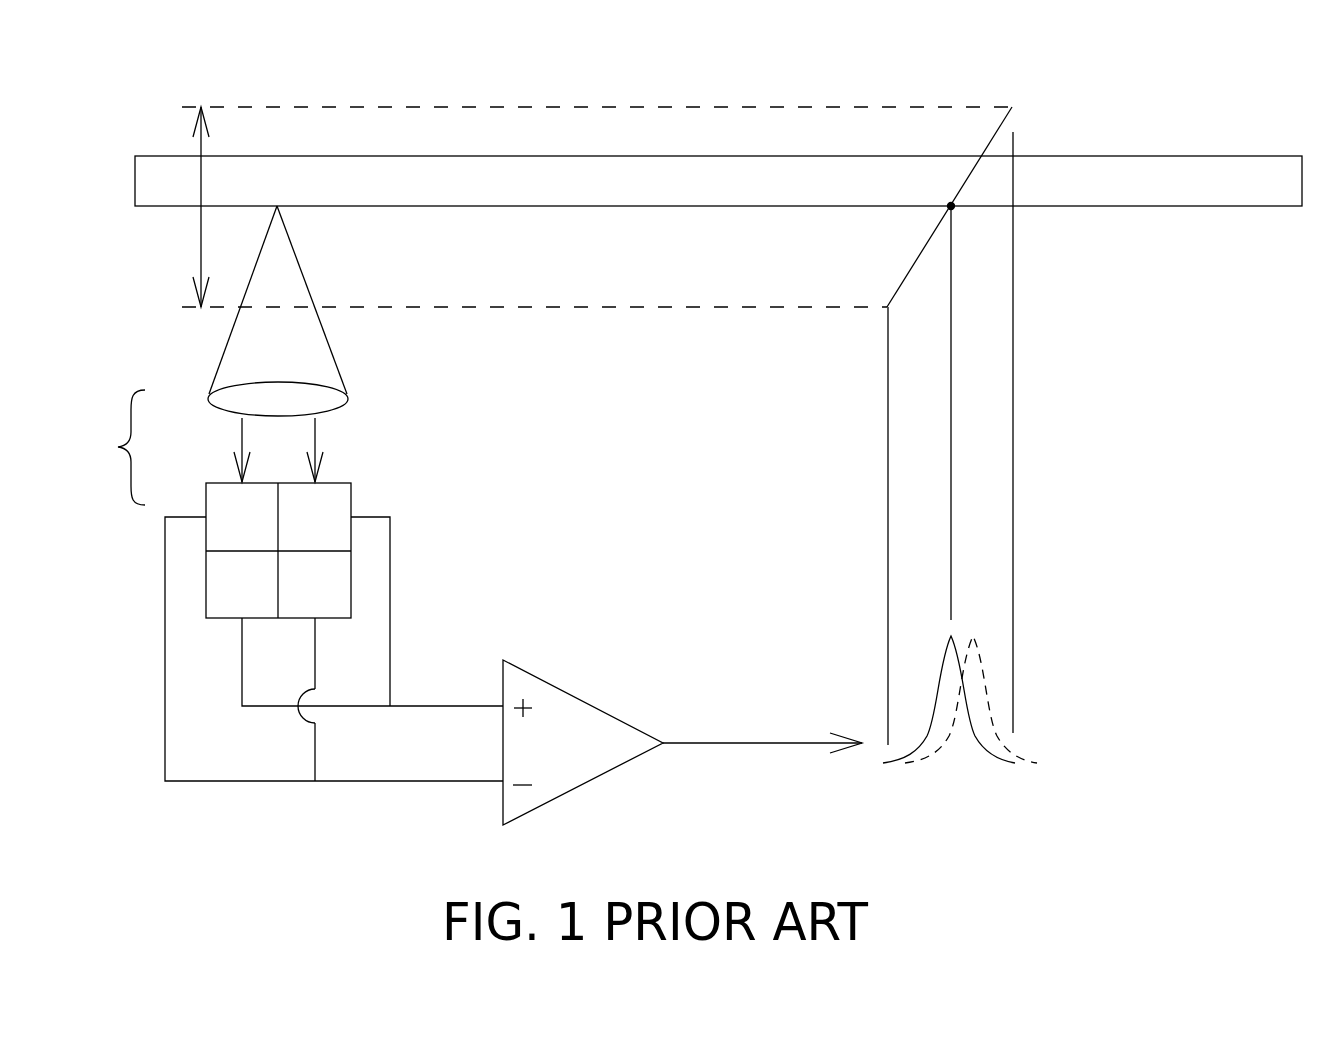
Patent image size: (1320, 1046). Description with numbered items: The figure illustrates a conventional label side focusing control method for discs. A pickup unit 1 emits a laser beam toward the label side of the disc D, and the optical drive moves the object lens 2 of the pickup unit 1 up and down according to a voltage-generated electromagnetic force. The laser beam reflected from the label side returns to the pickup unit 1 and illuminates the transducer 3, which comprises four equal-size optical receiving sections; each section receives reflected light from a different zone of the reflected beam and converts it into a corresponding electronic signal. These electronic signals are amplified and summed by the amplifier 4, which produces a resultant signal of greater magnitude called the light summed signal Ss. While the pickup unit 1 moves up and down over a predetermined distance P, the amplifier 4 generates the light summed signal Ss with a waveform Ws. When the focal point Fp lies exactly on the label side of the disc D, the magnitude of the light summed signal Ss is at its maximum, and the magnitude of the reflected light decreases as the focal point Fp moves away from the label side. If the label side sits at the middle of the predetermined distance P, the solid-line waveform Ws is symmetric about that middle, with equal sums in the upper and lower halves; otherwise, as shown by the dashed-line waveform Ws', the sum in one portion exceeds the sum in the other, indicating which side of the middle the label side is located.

The pickup unit 1 is at (118, 447).
The object lens 2 is at (208, 400).
The transducer 3 is at (206, 494).
The amplifier 4 is at (582, 700).
The disc D is at (1263, 155).
The predetermined distance P is at (587, 207).
The focal point Fp is at (950, 426).
The light summed signal Ss is at (762, 731).
The waveform Ws is at (913, 699).
The waveform in the dashed line Ws' is at (1005, 699).